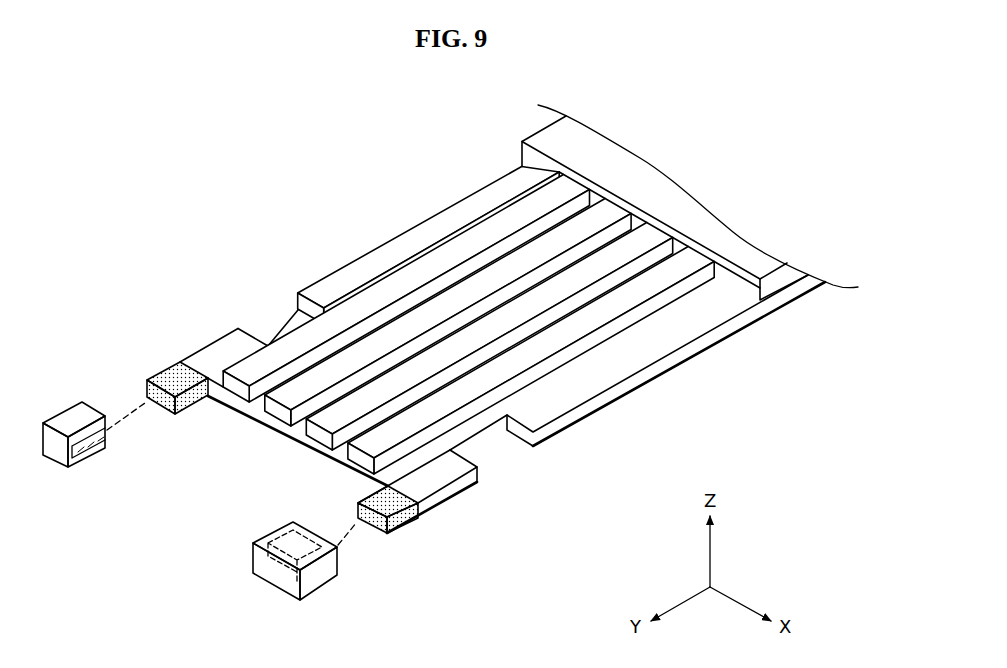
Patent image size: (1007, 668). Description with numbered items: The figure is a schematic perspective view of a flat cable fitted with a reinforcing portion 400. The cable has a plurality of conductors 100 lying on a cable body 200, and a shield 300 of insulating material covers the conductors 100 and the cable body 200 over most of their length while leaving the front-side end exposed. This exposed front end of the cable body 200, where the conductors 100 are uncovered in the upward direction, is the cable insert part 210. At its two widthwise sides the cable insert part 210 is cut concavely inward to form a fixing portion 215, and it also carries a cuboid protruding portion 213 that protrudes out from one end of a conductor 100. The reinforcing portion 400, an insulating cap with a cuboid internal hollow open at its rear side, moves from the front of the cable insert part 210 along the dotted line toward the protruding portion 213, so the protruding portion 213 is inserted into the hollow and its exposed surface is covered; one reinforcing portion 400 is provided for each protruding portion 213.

The conductor 100 is at (423, 267).
The cable body 200 is at (460, 215).
The cable insert part 210 is at (590, 431).
The protruding portion 213 is at (156, 360).
The fixing portion 215 is at (270, 315).
The shield 300 is at (542, 148).
The reinforcing portion 400 is at (75, 417).